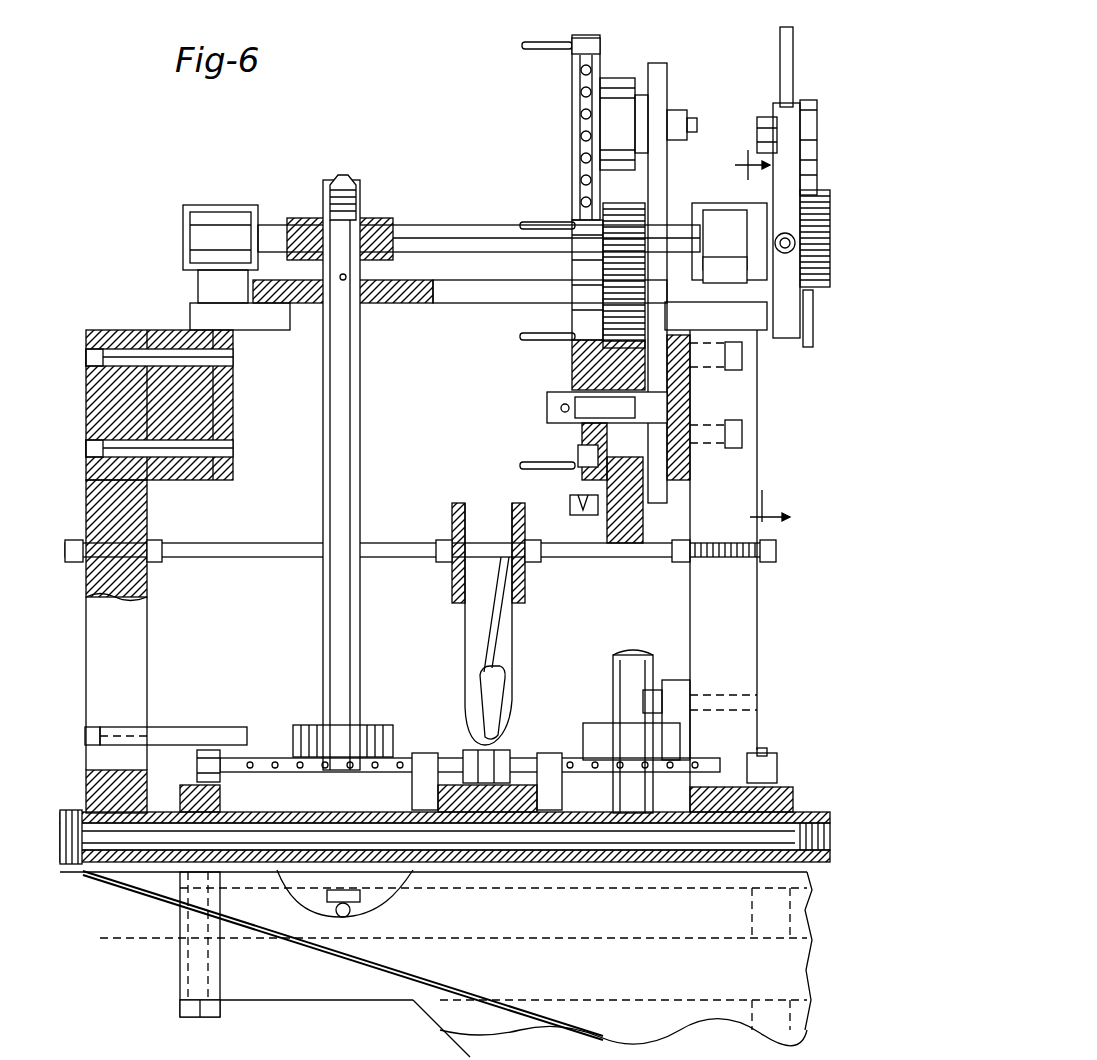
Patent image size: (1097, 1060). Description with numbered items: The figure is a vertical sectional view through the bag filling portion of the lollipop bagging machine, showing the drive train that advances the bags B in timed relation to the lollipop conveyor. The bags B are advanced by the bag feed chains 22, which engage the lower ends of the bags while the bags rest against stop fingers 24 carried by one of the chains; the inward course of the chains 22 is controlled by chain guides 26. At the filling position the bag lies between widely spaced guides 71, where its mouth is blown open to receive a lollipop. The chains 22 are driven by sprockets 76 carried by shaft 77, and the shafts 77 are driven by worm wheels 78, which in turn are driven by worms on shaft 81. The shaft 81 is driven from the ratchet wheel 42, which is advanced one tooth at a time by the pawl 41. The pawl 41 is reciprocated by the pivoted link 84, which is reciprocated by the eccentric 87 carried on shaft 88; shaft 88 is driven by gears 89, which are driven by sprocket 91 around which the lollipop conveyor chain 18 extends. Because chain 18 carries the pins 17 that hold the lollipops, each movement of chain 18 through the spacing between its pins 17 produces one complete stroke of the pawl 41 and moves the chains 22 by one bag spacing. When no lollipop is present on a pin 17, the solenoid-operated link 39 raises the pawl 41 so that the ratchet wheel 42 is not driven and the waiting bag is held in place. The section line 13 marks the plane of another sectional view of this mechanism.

The section line 13 is at (755, 334).
The pin 17 is at (546, 50).
The chain 18 is at (600, 44).
The chains 22 is at (197, 760).
The stop fingers 24 is at (505, 750).
The chain guides 26 is at (445, 760).
The link 39 is at (790, 62).
The pawl 41 is at (812, 106).
The ratchet wheel 42 is at (806, 348).
The guides 71 is at (452, 593).
The sprockets 76 is at (272, 752).
The shaft 77 is at (360, 626).
The worm wheels 78 is at (375, 228).
The shaft 81 is at (412, 230).
The pivoted link 84 is at (775, 131).
The eccentric 87 is at (752, 248).
The shaft 88 is at (832, 226).
The gears 89 is at (648, 285).
The sprocket 91 is at (582, 481).
The bags B is at (506, 676).